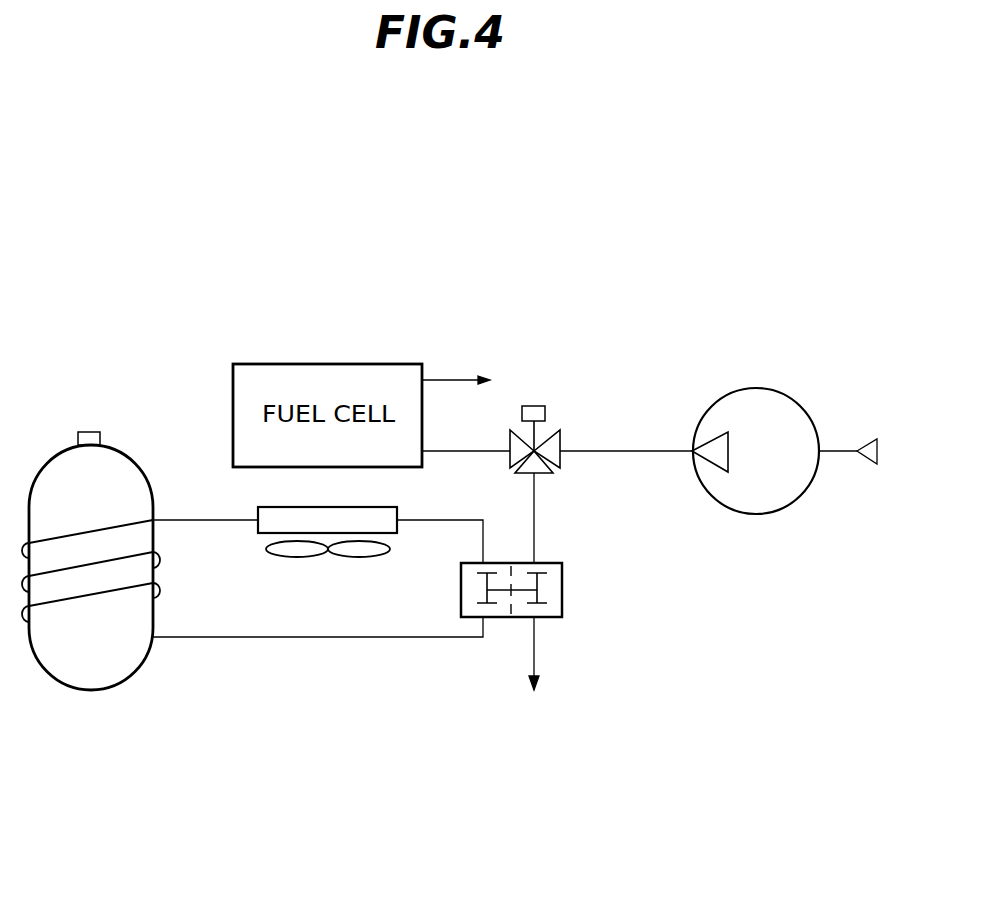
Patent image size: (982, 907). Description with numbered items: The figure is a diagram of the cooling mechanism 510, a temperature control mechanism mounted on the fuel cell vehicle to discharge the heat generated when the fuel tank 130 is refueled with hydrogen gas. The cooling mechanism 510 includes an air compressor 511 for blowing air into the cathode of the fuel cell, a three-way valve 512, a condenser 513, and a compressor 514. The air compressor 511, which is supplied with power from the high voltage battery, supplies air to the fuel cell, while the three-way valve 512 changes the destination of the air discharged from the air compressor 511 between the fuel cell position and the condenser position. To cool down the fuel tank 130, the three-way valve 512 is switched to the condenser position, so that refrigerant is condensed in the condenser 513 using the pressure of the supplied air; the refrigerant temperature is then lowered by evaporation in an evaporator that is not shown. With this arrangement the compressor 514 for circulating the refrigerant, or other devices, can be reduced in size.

The fuel tank 130 is at (112, 691).
The cooling mechanism 510 is at (500, 288).
The air compressor 511 is at (731, 388).
The three-way valve 512 is at (551, 432).
The condenser 513 is at (305, 577).
The compressor 514 is at (562, 597).